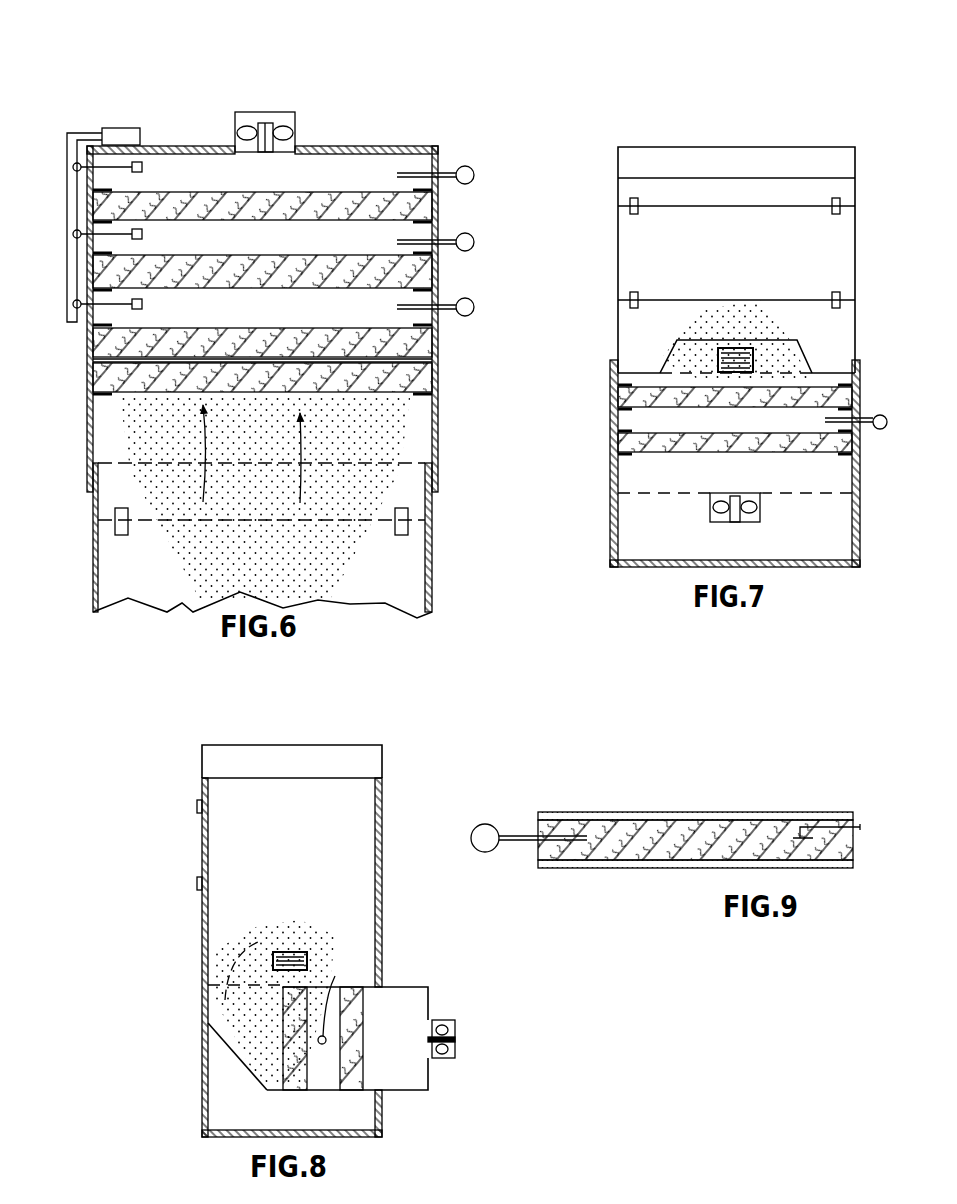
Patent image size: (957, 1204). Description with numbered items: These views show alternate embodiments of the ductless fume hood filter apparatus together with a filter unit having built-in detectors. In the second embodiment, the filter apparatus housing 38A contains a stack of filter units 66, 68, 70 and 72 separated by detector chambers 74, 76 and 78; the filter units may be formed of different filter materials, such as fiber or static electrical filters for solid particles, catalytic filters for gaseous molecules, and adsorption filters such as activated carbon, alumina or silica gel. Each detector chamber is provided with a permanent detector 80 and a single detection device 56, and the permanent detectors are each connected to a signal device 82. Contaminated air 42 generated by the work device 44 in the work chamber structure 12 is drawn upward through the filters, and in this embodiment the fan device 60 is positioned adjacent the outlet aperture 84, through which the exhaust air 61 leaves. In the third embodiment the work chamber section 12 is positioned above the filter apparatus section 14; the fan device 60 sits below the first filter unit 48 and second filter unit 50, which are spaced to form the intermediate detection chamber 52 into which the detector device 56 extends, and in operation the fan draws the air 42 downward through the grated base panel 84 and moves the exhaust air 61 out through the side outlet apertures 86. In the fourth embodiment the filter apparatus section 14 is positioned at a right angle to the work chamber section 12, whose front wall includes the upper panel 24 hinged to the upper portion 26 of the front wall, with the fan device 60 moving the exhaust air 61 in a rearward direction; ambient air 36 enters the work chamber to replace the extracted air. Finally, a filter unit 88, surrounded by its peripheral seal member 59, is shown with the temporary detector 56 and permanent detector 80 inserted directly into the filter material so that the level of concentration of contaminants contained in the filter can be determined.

In FIG. 6, the work chamber structure 12 is at (138, 558).
In FIG. 7, the work chamber structure 12 is at (865, 275).
In FIG. 8, the work chamber structure 12 is at (387, 790).
In FIG. 7, the filter apparatus 14 is at (870, 470).
In FIG. 8, the filter apparatus 14 is at (442, 1002).
In FIG. 8, the upper panel 24 is at (200, 828).
In FIG. 6, the upper portion of the front wall 26 is at (420, 437).
In FIG. 8, the upper portion of the front wall 26 is at (240, 1045).
In FIG. 7, the ambient air 36 is at (681, 360).
In FIG. 8, the ambient air 36 is at (206, 947).
In FIG. 6, the filter apparatus housing 38A is at (88, 425).
In FIG. 6, the contaminated air 42 is at (266, 569).
In FIG. 7, the contaminated air 42 is at (747, 310).
In FIG. 8, the contaminated air 42 is at (308, 943).
In FIG. 7, the work device 44 is at (717, 360).
In FIG. 8, the work device 44 is at (290, 961).
In FIG. 7, the first filter unit 48 is at (627, 393).
In FIG. 8, the first filter unit 48 is at (295, 1090).
In FIG. 7, the second filter unit 50 is at (630, 445).
In FIG. 8, the second filter unit 50 is at (363, 1090).
In FIG. 7, the intermediate detection chamber 52 is at (630, 420).
In FIG. 6, the detector device 56 is at (474, 181).
In FIG. 7, the detector device 56 is at (896, 409).
In FIG. 8, the detector device 56 is at (341, 999).
In FIG. 9, the detector device 56 is at (529, 826).
In FIG. 9, the seal member 59 is at (853, 795).
In FIG. 6, the fan device 60 is at (295, 128).
In FIG. 7, the fan device 60 is at (723, 513).
In FIG. 8, the fan device 60 is at (445, 1058).
In FIG. 6, the exhaust air 61 is at (240, 88).
In FIG. 7, the exhaust air 61 is at (657, 513).
In FIG. 8, the exhaust air 61 is at (537, 1065).
In FIG. 6, the filter unit 66 is at (432, 379).
In FIG. 6, the filter unit 68 is at (432, 344).
In FIG. 6, the filter unit 70 is at (433, 277).
In FIG. 6, the filter unit 72 is at (433, 210).
In FIG. 6, the detector chamber 74 is at (282, 316).
In FIG. 6, the detector chamber 76 is at (282, 249).
In FIG. 6, the detector chamber 78 is at (282, 184).
In FIG. 6, the permanent detector 80 is at (142, 170).
In FIG. 9, the permanent detector 80 is at (860, 824).
In FIG. 6, the signal device 82 is at (133, 132).
In FIG. 6, the outlet aperture / grated base panel 84 is at (262, 98).
In FIG. 7, the outlet aperture / grated base panel 84 is at (777, 372).
In FIG. 8, the outlet aperture / grated base panel 84 is at (237, 995).
In FIG. 7, the side outlet apertures 86 is at (610, 555).
In FIG. 9, the filter unit 88 is at (650, 812).